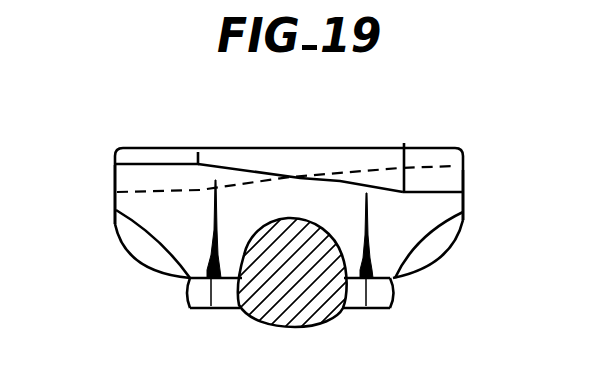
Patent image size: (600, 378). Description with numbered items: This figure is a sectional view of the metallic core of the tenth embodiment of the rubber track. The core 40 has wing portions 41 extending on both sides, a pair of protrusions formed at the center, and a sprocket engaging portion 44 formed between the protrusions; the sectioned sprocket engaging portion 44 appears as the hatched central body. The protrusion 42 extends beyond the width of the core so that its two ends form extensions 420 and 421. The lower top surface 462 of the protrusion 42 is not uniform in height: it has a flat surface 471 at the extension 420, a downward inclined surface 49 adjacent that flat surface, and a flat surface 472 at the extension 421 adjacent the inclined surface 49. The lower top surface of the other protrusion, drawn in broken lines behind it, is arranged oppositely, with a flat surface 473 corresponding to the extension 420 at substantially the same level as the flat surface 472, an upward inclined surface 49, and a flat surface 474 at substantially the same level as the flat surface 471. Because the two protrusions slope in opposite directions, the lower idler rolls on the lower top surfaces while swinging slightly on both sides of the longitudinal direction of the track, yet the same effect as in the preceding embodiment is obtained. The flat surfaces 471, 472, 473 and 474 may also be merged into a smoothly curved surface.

The rotor assembly 40 is at (233, 320).
The wing portion 41 is at (393, 308).
The protrusion 42 is at (313, 143).
The extension 420 is at (127, 181).
The extension 421 is at (458, 202).
The sprocket engaging portion 44 is at (313, 303).
The lower top surface 462 is at (257, 173).
The flat surface 471 is at (137, 163).
The flat surface 472 is at (450, 192).
The flat surface 473 is at (140, 190).
The flat surface 474 is at (439, 166).
The inclined surface 49 is at (218, 185).